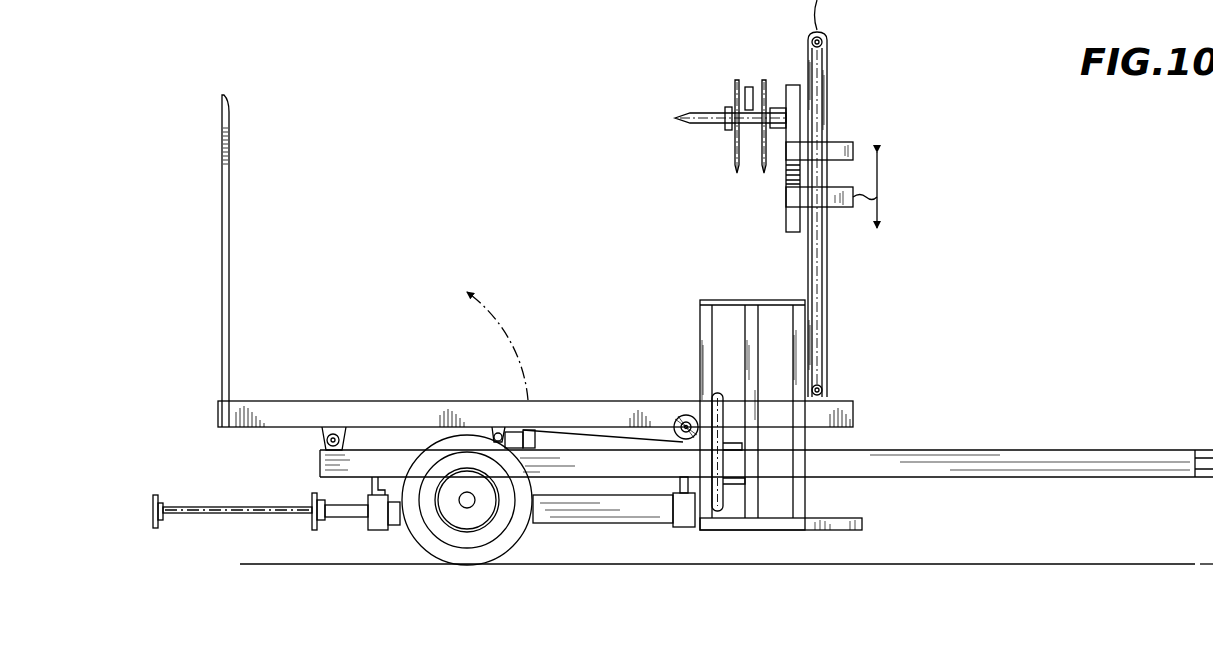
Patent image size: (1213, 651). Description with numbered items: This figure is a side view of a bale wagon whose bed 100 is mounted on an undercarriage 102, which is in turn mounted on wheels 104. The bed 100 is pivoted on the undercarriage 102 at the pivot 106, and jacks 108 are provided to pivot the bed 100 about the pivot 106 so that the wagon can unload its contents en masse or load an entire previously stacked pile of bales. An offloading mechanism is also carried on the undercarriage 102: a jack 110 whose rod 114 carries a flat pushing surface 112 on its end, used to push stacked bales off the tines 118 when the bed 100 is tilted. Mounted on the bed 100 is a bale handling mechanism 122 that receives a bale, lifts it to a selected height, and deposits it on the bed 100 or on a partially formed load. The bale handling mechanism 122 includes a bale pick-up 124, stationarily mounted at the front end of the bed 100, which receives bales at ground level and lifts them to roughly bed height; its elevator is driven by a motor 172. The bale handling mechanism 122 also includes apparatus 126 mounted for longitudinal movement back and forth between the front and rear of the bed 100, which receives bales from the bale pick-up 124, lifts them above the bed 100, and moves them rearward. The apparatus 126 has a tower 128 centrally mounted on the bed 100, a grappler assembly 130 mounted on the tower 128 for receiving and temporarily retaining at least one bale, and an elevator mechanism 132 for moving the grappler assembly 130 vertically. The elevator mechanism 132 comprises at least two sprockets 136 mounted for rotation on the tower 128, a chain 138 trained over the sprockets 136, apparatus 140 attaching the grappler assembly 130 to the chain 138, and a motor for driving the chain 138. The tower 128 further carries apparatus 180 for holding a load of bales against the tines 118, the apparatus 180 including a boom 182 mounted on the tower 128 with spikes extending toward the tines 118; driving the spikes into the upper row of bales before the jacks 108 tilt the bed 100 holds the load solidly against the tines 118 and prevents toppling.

The bed 100 is at (250, 428).
The undercarriage 102 is at (372, 457).
The wheels 104 is at (507, 532).
The pivot 106 is at (323, 438).
The jacks 108 is at (528, 346).
The jack 110 is at (618, 513).
The flat pushing surface 112 is at (310, 518).
The rod 114 is at (357, 515).
The tines 118 is at (225, 228).
The bale handling mechanism 122 is at (842, 297).
The bale pick-up 124 is at (787, 522).
The apparatus 126 is at (832, 257).
The tower 128 is at (830, 80).
The grappler assembly 130 is at (737, 78).
The elevator mechanism 132 is at (826, 330).
The sprockets 136 is at (822, 48).
The chain 138 is at (826, 97).
The apparatus for attaching the grappler assembly to the chain 140 is at (847, 145).
The motor 172 is at (688, 415).
The apparatus for holding a load of bales against the tines 180 is at (700, 112).
The boom 182 is at (727, 128).